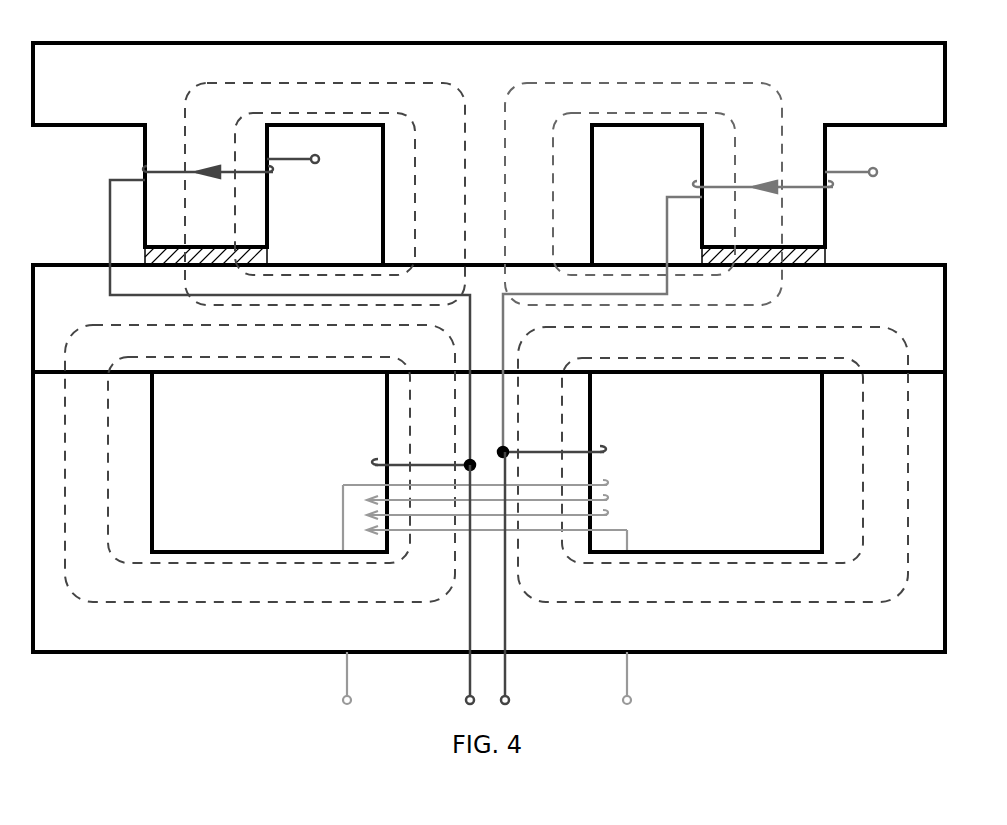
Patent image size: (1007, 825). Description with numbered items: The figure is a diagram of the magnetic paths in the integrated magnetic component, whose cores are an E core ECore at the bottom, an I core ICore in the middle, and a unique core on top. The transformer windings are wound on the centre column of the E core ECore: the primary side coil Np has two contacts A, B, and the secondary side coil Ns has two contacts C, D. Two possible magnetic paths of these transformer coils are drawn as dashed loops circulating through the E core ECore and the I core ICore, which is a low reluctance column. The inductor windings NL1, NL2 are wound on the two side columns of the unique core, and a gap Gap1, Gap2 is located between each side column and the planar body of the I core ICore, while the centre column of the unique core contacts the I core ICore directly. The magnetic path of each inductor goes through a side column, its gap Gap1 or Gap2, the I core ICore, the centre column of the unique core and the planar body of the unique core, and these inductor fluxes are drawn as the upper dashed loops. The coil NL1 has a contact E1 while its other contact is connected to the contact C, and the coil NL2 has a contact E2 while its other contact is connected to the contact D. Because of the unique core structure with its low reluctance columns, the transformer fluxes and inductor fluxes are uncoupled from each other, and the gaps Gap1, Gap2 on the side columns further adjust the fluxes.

The I core ICore is at (489, 318).
The E core ECore is at (489, 512).
The first gap Gap1 is at (249, 249).
The second gap Gap2 is at (800, 249).
The first inductor winding NL1 is at (290, 315).
The second inductor winding NL2 is at (668, 316).
The contact of first inductor winding E1 is at (293, 179).
The contact of second inductor winding E2 is at (851, 157).
The secondary side coil Ns is at (510, 461).
The primary side coil Np is at (496, 515).
The contact of primary side coil A is at (359, 678).
The contact of primary side coil B is at (643, 678).
The contact of secondary side coil C is at (458, 584).
The contact of secondary side coil D is at (519, 578).